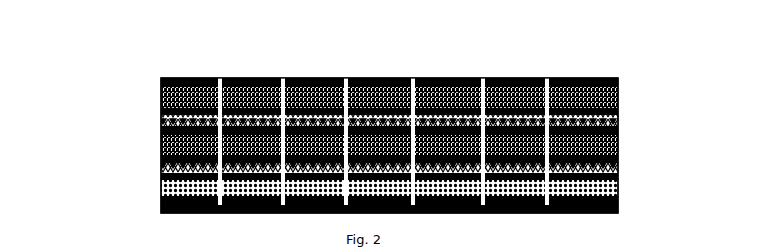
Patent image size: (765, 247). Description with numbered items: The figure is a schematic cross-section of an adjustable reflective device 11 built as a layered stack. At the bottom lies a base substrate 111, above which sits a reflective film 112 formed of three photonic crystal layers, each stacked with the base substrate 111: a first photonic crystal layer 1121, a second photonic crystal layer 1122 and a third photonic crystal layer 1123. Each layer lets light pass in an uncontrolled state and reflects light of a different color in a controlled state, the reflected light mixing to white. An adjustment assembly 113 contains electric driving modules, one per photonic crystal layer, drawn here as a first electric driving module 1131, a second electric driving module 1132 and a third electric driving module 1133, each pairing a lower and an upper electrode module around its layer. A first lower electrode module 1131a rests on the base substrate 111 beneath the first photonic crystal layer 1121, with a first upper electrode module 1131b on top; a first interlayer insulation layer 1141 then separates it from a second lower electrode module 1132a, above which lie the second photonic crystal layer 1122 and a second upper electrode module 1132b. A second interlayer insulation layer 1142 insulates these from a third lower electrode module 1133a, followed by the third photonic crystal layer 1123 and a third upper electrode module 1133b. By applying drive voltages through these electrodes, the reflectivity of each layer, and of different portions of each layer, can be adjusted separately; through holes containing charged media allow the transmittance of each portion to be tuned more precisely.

The adjustable reflective device 11 is at (119, 30).
The base substrate 111 is at (610, 200).
The reflective film 112 is at (441, 135).
The first photonic crystal layer 1121 is at (422, 179).
The second photonic crystal layer 1122 is at (610, 133).
The third photonic crystal layer 1123 is at (610, 87).
The adjustment assembly 113 is at (354, 134).
The first light emitting unit 1131 is at (336, 179).
The first lower electrode module 1131a is at (153, 190).
The first upper electrode module 1131b is at (153, 163).
The second light emitting unit 1132 is at (336, 135).
The second lower electrode module 1132a is at (153, 145).
The second upper electrode module 1132b is at (153, 120).
The third light emitting unit 1133 is at (336, 89).
The third lower electrode module 1133a is at (153, 102).
The third upper electrode module 1133b is at (153, 73).
The first interlayer insulation layer 1141 is at (610, 155).
The second interlayer insulation layer 1142 is at (610, 110).